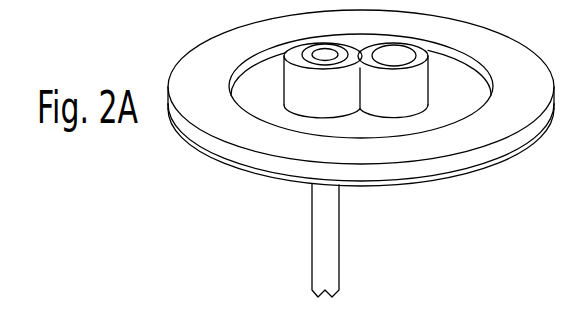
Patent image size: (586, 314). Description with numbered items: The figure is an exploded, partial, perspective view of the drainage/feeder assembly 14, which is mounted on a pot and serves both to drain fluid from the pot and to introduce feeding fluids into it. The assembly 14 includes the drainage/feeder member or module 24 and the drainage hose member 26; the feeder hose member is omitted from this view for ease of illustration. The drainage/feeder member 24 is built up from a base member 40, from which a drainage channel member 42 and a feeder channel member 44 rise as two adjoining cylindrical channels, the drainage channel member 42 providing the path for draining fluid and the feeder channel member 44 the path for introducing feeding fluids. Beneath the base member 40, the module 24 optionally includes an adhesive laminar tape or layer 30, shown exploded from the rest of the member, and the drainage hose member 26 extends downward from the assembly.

The drainage/feeder assembly 14 is at (356, 150).
The drainage/feeder member 24 is at (400, 188).
The drainage hose member 26 is at (311, 259).
The adhesive laminar tape or layer 30 is at (210, 50).
The base member 40 is at (267, 181).
The drainage channel member 42 is at (305, 87).
The feeder channel member 44 is at (417, 88).